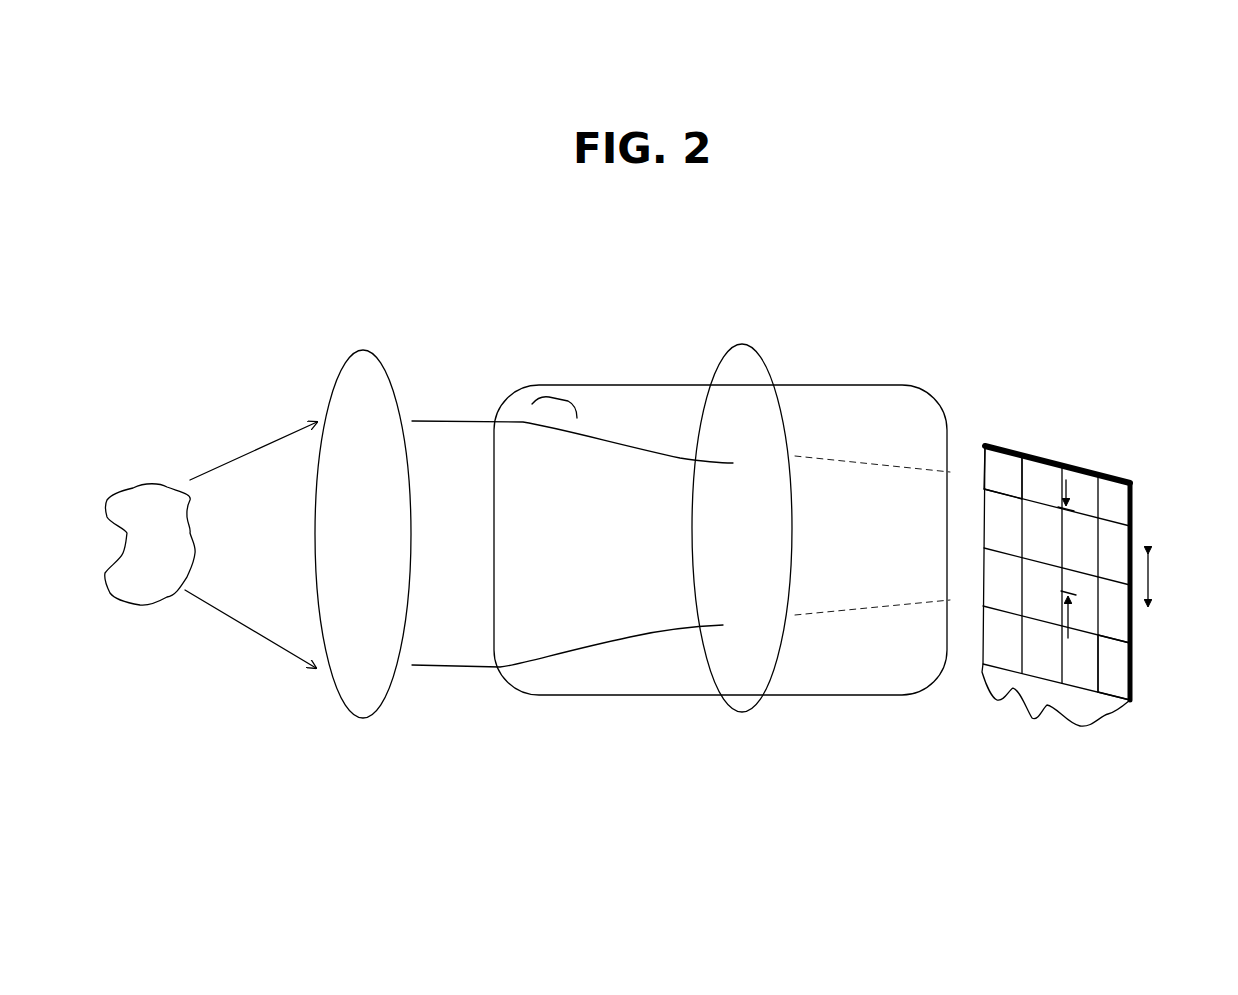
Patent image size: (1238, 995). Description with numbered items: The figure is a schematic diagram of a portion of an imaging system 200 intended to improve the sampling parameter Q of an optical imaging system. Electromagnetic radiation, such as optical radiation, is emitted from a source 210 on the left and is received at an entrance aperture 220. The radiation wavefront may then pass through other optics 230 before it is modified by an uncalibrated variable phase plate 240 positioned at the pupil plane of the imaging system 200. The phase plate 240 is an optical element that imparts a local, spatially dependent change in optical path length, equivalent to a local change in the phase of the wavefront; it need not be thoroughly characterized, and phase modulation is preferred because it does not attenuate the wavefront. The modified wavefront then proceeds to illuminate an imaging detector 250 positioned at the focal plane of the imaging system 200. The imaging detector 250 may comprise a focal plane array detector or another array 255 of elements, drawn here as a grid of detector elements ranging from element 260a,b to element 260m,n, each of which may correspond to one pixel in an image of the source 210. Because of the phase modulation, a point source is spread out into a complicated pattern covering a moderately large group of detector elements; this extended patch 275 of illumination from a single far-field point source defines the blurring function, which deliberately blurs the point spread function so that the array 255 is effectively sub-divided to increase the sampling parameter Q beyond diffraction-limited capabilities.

The imaging system 200 is at (1043, 190).
The source 210 is at (130, 610).
The entrance aperture 220 is at (366, 352).
The other optics 230 is at (560, 398).
The uncalibrated variable phase plate 240 is at (748, 345).
The imaging detector 250 is at (983, 450).
The array 255 is at (1032, 718).
The detector element 260a,b is at (983, 457).
The detector element 260m,n is at (1118, 688).
The extended patch of illumination 275 is at (1065, 455).